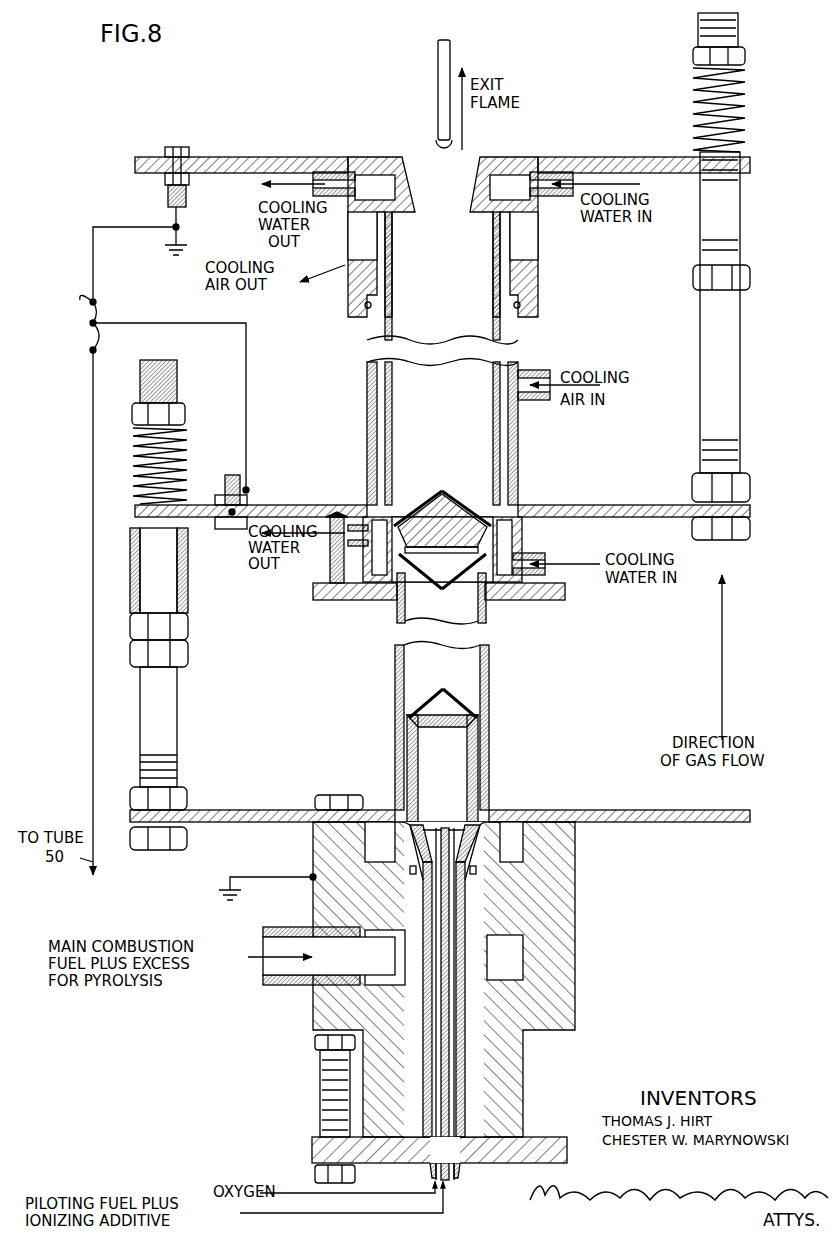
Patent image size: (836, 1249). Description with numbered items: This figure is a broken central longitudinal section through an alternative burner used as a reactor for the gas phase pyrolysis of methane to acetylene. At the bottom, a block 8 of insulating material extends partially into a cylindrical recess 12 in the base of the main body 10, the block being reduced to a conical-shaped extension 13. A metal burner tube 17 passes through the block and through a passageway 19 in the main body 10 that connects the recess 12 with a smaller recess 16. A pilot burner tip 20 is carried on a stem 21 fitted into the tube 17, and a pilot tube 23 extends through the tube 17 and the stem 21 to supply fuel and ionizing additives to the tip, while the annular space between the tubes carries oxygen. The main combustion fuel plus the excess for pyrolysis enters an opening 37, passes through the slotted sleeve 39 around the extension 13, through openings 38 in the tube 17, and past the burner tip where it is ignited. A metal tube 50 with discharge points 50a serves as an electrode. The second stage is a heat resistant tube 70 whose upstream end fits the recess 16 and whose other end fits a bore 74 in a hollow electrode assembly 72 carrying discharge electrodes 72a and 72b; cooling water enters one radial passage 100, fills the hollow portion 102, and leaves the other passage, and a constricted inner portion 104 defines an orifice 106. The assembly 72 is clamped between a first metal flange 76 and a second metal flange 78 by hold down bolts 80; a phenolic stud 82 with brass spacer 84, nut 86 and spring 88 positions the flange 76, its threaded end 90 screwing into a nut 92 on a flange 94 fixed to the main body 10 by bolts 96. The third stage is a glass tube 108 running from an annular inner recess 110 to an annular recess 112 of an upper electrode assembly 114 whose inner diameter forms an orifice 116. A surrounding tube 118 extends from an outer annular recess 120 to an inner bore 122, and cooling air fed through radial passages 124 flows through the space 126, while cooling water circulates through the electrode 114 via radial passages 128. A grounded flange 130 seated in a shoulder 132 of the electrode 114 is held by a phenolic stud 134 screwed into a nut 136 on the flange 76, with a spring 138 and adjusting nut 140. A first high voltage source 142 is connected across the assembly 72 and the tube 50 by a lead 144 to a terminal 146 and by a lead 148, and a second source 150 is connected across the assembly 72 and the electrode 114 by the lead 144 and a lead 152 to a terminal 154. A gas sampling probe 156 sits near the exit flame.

The block of insulating material 8 is at (523, 1110).
The main body 10 is at (575, 1030).
The cylindrical recess 12 is at (515, 954).
The conical-shaped extension 13 is at (412, 955).
The cylindrical recess 16 is at (377, 850).
The metal burner tube 17 is at (430, 1170).
The passageway 19 is at (470, 880).
The pilot burner tip 20 is at (442, 818).
The stem 21 is at (460, 840).
The pilot tube 23 is at (449, 1093).
The opening 37 is at (305, 965).
The openings 38 is at (418, 850).
The perforated sleeve 39 is at (525, 955).
The metal tube 50 is at (460, 745).
The discharge points 50a is at (443, 690).
The heat resistant Vycor tube 70 is at (487, 635).
The electrode assembly 72 is at (522, 530).
The set of discharge electrodes 72a is at (443, 590).
The second set of discharge electrodes 72b is at (440, 505).
The bore 74 is at (372, 603).
The first metal flange 76 is at (268, 507).
The second metal flange 78 is at (313, 600).
The hold down bolts 80 is at (330, 557).
The phenolic stud 82 is at (170, 705).
The brass spacer 84 is at (185, 638).
The nut 86 is at (180, 410).
The spring 88 is at (185, 440).
The threaded end 90 is at (178, 765).
The nut 92 is at (183, 793).
The flange 94 is at (252, 810).
The hold down bolts 96 is at (338, 800).
The radial passages 100 is at (410, 541).
The hollow portion 102 is at (370, 557).
The constricted inner portion 104 is at (480, 530).
The orifice 106 is at (470, 553).
The second heat resistant Vycor glass tube 108 is at (392, 427).
The annular inner recess 110 is at (392, 503).
The annular recess 112 is at (395, 212).
The electrode assembly 114 is at (495, 160).
The orifice 116 is at (445, 212).
The Vycor tube 118 is at (367, 427).
The outer annular recess 120 is at (368, 503).
The inner bore 122 is at (360, 305).
The radial passages 124 is at (360, 240).
The space 126 is at (515, 327).
The radial passages 128 is at (332, 172).
The flange 130 is at (640, 157).
The shoulder 132 is at (573, 157).
The phenolic stud 134 is at (700, 427).
The nut 136 is at (695, 480).
The spring 138 is at (693, 76).
The adjusting nut 140 is at (698, 52).
The first high voltage alternating current source 142 is at (90, 346).
The lead 144 is at (170, 323).
The terminal 146 is at (225, 480).
The lead 148 is at (93, 455).
The second high voltage alternating current source 150 is at (90, 318).
The lead 152 is at (148, 227).
The terminal 154 is at (186, 200).
The gas sampling probe 156 is at (438, 56).